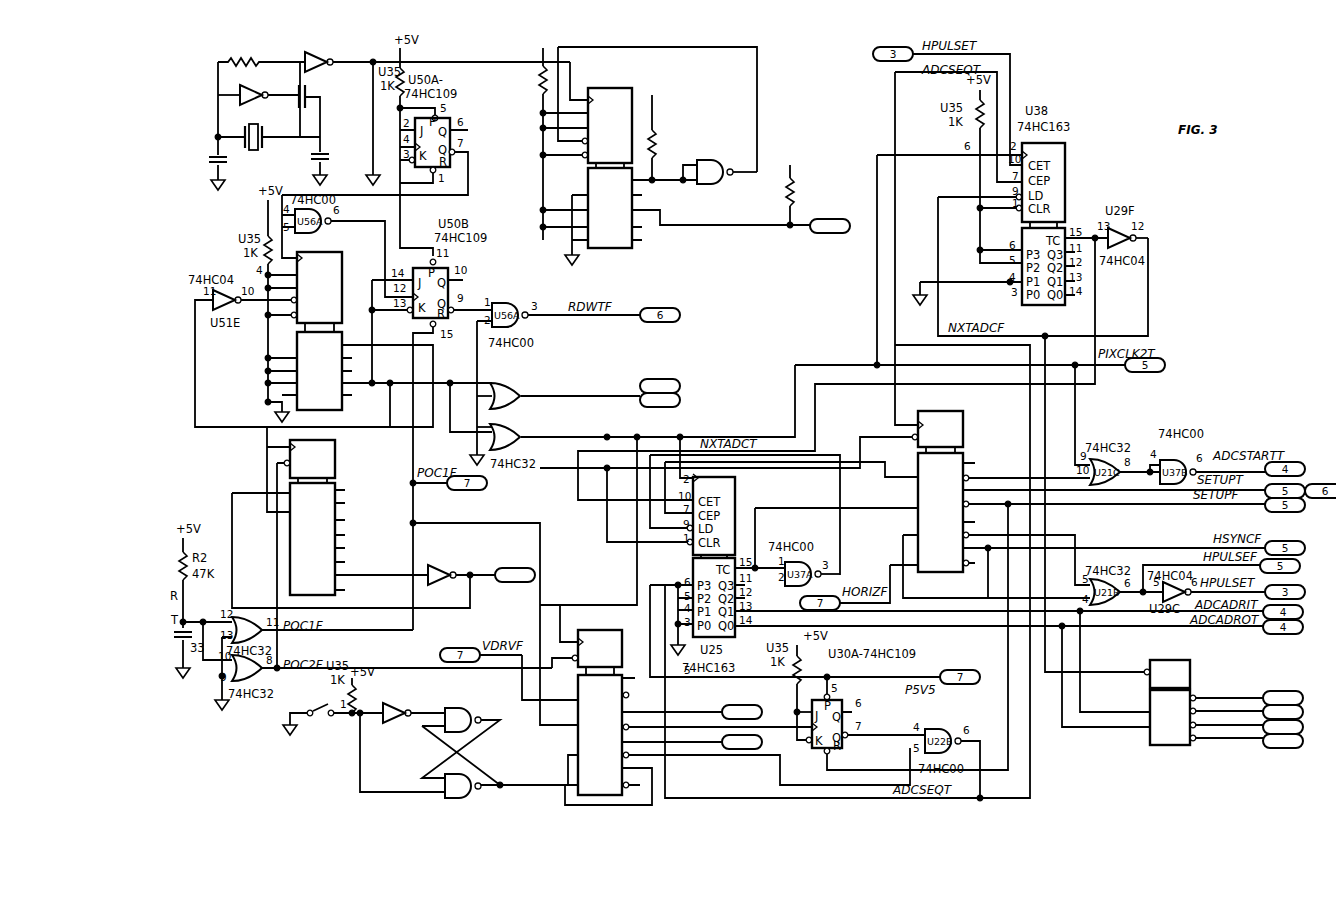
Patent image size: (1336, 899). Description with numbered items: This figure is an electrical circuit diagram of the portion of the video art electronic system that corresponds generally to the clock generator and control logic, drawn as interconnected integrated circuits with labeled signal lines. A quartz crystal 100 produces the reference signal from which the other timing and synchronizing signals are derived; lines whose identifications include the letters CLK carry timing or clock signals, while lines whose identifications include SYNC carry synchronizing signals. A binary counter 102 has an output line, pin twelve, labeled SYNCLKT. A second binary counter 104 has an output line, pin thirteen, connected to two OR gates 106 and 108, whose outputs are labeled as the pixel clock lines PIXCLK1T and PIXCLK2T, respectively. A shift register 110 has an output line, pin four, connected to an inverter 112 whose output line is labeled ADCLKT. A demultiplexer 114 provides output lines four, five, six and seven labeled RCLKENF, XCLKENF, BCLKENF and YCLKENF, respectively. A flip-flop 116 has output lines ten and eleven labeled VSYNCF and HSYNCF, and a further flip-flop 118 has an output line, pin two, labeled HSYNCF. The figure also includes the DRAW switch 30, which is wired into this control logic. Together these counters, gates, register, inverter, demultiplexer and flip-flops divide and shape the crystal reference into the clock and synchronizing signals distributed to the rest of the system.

The DRAW switch 30 is at (290, 713).
The quartz crystal 100 is at (218, 126).
The binary counter 102 is at (745, 47).
The binary counter 104 is at (343, 264).
The OR gate 106 is at (512, 376).
The OR gate 108 is at (514, 426).
The shift register 110 is at (290, 535).
The inverter 112 is at (458, 568).
The demultiplexer 114 is at (1098, 766).
The flip-flop 116 is at (560, 737).
The flip-flop 118 is at (918, 515).